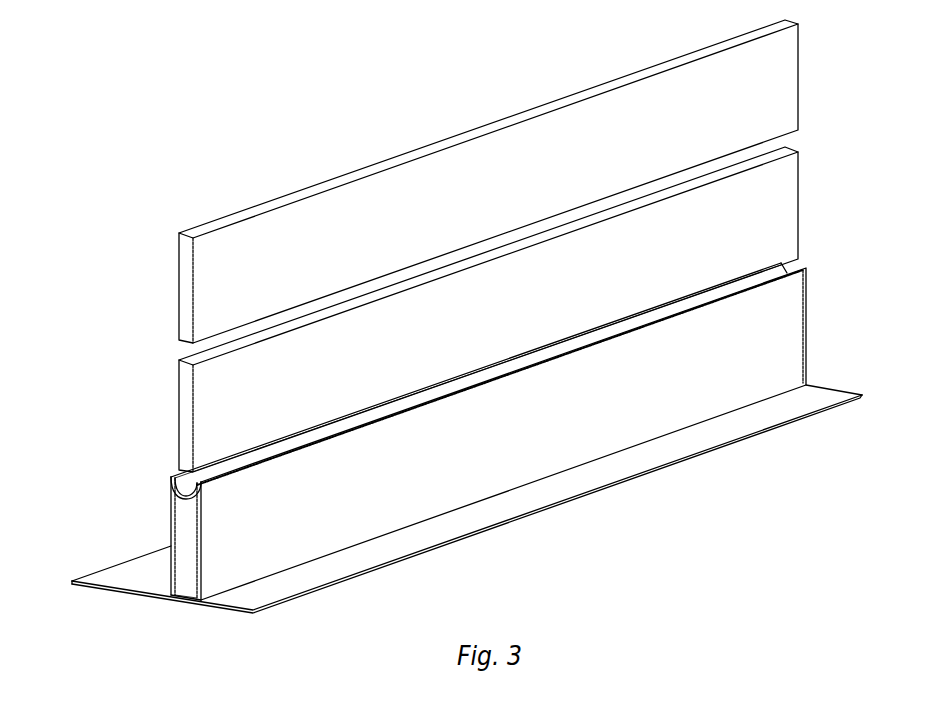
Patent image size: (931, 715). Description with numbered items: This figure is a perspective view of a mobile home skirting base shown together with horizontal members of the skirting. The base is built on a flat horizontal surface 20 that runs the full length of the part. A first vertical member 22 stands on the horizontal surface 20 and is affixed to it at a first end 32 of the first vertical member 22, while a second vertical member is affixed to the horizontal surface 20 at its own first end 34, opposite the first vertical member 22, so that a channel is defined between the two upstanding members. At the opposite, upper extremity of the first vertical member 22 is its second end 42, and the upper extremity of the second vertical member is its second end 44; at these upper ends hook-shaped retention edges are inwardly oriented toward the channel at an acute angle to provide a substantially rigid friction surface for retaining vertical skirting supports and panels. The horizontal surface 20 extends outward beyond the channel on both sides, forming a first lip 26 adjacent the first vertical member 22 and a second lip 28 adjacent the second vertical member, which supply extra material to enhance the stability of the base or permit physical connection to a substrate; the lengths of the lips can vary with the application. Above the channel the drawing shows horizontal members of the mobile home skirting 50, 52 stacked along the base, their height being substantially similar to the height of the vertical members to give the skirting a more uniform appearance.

The horizontal surface 20 is at (441, 531).
The first vertical member 22 is at (432, 431).
The first lip 26 is at (272, 587).
The second lip 28 is at (128, 578).
The first end of the first vertical member 32 is at (201, 598).
The first end of the second vertical member 34 is at (171, 592).
The second end of the first vertical member 42 is at (207, 478).
The second end of the second vertical member 44 is at (172, 478).
The horizontal member of the mobile home skirting 50 is at (425, 343).
The horizontal member of the mobile home skirting 52 is at (425, 210).